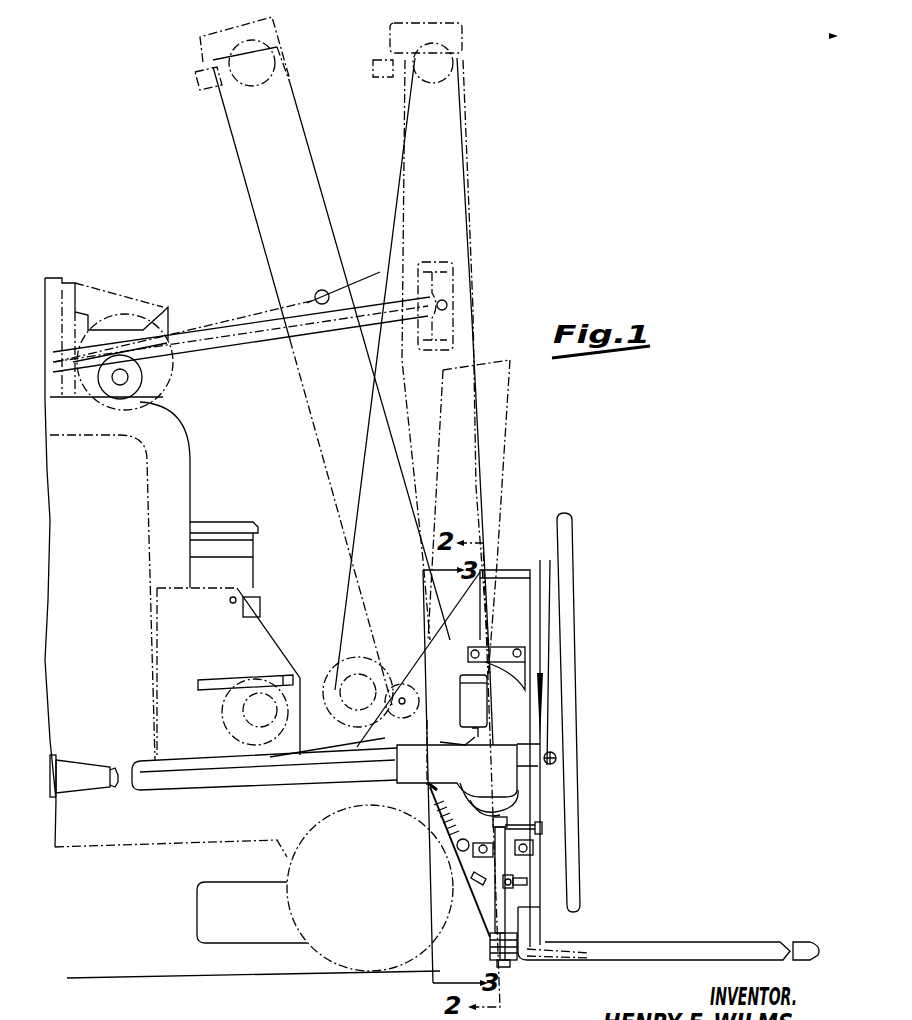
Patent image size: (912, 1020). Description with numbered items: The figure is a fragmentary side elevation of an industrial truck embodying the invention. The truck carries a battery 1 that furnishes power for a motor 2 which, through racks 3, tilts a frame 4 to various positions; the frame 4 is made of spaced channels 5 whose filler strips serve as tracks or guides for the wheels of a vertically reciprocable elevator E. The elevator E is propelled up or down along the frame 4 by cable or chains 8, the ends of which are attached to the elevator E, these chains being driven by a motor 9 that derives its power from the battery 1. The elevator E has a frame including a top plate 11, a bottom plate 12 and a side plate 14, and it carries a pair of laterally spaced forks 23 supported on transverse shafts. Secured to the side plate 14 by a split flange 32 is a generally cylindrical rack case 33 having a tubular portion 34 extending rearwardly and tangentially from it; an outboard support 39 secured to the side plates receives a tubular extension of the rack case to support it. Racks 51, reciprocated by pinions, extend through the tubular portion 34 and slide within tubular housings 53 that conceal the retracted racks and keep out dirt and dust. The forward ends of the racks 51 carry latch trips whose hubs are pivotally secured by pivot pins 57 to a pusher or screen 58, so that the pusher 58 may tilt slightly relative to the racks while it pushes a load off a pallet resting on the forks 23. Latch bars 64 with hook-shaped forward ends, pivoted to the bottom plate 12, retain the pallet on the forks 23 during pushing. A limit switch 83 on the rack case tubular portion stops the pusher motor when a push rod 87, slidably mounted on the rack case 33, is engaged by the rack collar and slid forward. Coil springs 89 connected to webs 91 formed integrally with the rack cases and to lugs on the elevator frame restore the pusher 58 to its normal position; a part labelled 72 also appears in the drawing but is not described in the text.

The battery 1 is at (127, 457).
The motor 2 is at (98, 300).
The racks 3 is at (275, 341).
The frame 4 is at (465, 222).
The spaced channels 5 is at (478, 440).
The cable or chains 8 is at (393, 230).
The motor 9 is at (245, 562).
The top plate 11 is at (523, 568).
The bottom plate 12 is at (487, 937).
The side plate 14 is at (513, 607).
The forks 23 is at (672, 953).
The split flange 32 is at (520, 792).
The rack case 33 is at (556, 756).
The tubular portion 34 is at (467, 770).
The outboard support 39 is at (523, 667).
The racks 51 is at (113, 763).
The tubular housings 53 is at (245, 777).
The pivot pins 57 is at (573, 753).
The pusher or screen 58 is at (575, 858).
The latch bars 64 is at (555, 962).
The pedal rod 72 is at (517, 897).
The limit switch 83 is at (483, 697).
The push rod 87 is at (462, 745).
The coil springs 89 is at (450, 820).
The webs 91 is at (432, 788).
The elevator E is at (537, 630).